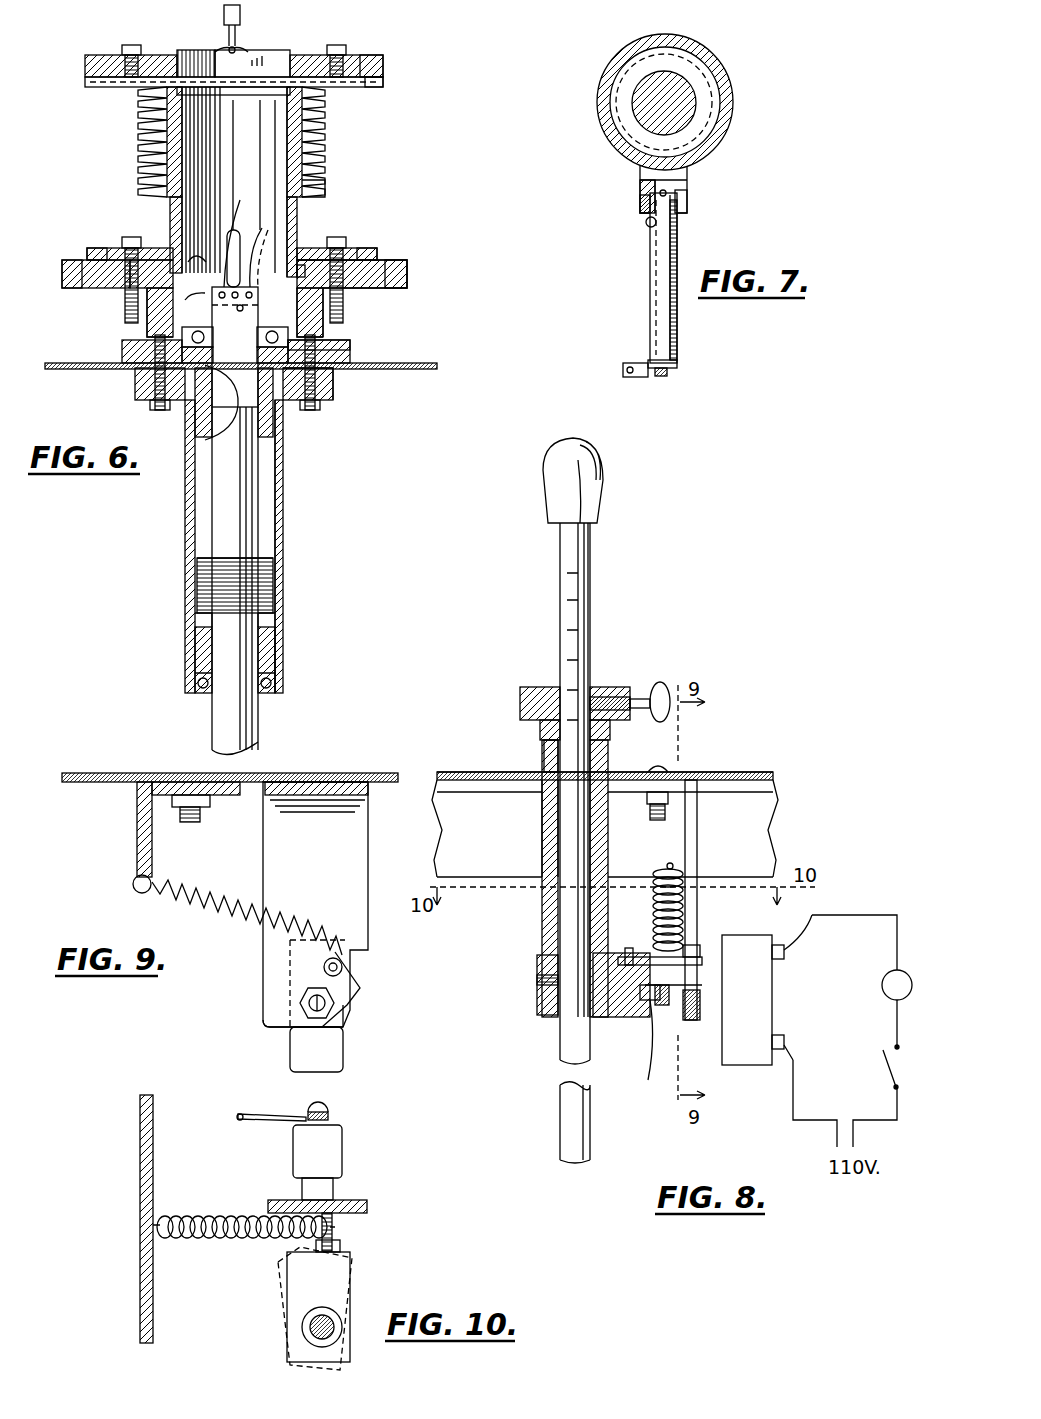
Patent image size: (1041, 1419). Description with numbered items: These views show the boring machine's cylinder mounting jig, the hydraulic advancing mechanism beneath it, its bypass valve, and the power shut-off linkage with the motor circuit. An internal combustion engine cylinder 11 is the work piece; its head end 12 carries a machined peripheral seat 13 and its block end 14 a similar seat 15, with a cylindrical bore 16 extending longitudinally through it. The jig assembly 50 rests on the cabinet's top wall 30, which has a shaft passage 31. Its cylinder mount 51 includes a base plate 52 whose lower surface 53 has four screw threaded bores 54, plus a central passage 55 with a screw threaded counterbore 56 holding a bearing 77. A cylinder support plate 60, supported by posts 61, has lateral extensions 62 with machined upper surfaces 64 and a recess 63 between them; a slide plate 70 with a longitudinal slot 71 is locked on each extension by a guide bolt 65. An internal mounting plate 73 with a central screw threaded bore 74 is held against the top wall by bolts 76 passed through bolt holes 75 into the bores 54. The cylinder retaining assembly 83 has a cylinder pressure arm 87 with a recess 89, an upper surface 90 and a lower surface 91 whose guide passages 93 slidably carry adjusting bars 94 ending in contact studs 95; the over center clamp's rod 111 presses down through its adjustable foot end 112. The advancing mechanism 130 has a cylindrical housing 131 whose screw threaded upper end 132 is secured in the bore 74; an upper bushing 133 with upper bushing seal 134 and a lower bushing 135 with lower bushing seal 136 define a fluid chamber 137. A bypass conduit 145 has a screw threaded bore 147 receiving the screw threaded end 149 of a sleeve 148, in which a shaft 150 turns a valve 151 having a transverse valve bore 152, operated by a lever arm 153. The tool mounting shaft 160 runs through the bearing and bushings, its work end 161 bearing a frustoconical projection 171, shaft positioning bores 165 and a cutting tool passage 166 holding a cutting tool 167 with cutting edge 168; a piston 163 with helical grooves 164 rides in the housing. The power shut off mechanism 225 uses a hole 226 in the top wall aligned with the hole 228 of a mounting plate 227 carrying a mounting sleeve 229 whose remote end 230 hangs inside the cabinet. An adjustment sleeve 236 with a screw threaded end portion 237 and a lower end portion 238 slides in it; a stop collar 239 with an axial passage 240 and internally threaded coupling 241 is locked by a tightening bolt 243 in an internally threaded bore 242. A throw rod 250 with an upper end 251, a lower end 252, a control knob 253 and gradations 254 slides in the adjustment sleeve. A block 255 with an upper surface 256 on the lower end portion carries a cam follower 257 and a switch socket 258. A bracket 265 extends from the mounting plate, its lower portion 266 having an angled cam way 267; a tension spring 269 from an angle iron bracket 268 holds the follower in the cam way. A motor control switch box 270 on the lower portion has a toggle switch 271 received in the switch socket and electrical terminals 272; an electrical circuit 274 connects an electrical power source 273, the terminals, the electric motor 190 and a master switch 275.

In FIG. 6, the internal combustion engine cylinder 11 is at (338, 151).
In FIG. 6, the head end 12 is at (140, 100).
In FIG. 6, the machined peripheral seat 13 is at (320, 92).
In FIG. 6, the block end 14 is at (292, 262).
In FIG. 6, the machined peripheral seat 15 is at (178, 262).
In FIG. 6, the cylindrical bore 16 is at (300, 176).
In FIG. 6, the top wall 30 is at (437, 363).
In FIG. 8, the top wall 30 is at (760, 772).
In FIG. 9, the top wall 30 is at (98, 773).
In FIG. 6, the shaft passage 31 is at (195, 410).
In FIG. 6, the jig assembly 50 is at (388, 310).
In FIG. 6, the cylinder mount 51 is at (418, 274).
In FIG. 6, the base plate 52 is at (345, 340).
In FIG. 6, the lower surface 53 is at (345, 378).
In FIG. 6, the screw threaded bores 54 is at (165, 345).
In FIG. 6, the central passage 55 is at (205, 420).
In FIG. 6, the counterbore 56 is at (195, 335).
In FIG. 6, the cylinder support plate 60 is at (64, 275).
In FIG. 6, the posts 61 is at (150, 305).
In FIG. 6, the lateral extensions 62 is at (88, 270).
In FIG. 6, the recess 63 is at (300, 270).
In FIG. 6, the machined upper surfaces 64 is at (90, 265).
In FIG. 6, the guide bolt 65 is at (120, 248).
In FIG. 6, the slide plate 70 is at (92, 260).
In FIG. 6, the longitudinal slot 71 is at (130, 247).
In FIG. 6, the internal mounting plate 73 is at (354, 401).
In FIG. 6, the central screw threaded bore 74 is at (272, 400).
In FIG. 6, the bolt holes 75 is at (155, 393).
In FIG. 6, the bolts 76 is at (150, 402).
In FIG. 6, the bearing 77 is at (207, 442).
In FIG. 6, the cylinder retaining assembly 83 is at (400, 52).
In FIG. 6, the cylinder pressure arm 87 is at (366, 56).
In FIG. 6, the recess 89 is at (268, 55).
In FIG. 6, the upper surface 90 is at (170, 55).
In FIG. 6, the lower surface 91 is at (378, 92).
In FIG. 6, the longitudinal guide passage 93 is at (90, 80).
In FIG. 6, the adjusting bar 94 is at (96, 55).
In FIG. 6, the contact stud 95 is at (292, 96).
In FIG. 6, the rod 111 is at (240, 14).
In FIG. 6, the foot end 112 is at (222, 42).
In FIG. 6, the advancing mechanism 130 is at (298, 566).
In FIG. 6, the cylindrical housing 131 is at (190, 545).
In FIG. 6, the screw threaded upper end 132 is at (152, 380).
In FIG. 6, the upper bushing 133 is at (255, 460).
In FIG. 6, the upper bushing seal 134 is at (270, 462).
In FIG. 6, the lower bushing 135 is at (270, 645).
In FIG. 6, the lower bushing seal 136 is at (215, 690).
In FIG. 6, the fluid chamber 137 is at (265, 485).
In FIG. 7, the bypass conduit 145 is at (690, 196).
In FIG. 7, the screw threaded bore 147 is at (648, 224).
In FIG. 7, the sleeve 148 is at (650, 270).
In FIG. 7, the screw threaded end 149 is at (643, 205).
In FIG. 7, the shaft 150 is at (676, 232).
In FIG. 7, the valve 151 is at (660, 194).
In FIG. 7, the valve bore 152 is at (608, 150).
In FIG. 7, the lever arm 153 is at (650, 372).
In FIG. 6, the tool mounting shaft 160 is at (248, 713).
In FIG. 6, the work end 161 is at (260, 228).
In FIG. 6, the piston 163 is at (262, 556).
In FIG. 6, the helical grooves 164 is at (200, 598).
In FIG. 6, the shaft positioning bores 165 is at (233, 228).
In FIG. 6, the cutting tool passage 166 is at (248, 282).
In FIG. 6, the cutting tool 167 is at (190, 262).
In FIG. 6, the cutting edge 168 is at (185, 300).
In FIG. 6, the frustoconical projection 171 is at (240, 202).
In FIG. 8, the electric motor 190 is at (890, 970).
In FIG. 8, the power shut off mechanism 225 is at (676, 750).
In FIG. 8, the hole 226 is at (555, 770).
In FIG. 8, the mounting plate 227 is at (470, 794).
In FIG. 9, the mounting plate 227 is at (345, 790).
In FIG. 8, the hole 228 is at (540, 826).
In FIG. 8, the mounting sleeve 229 is at (548, 872).
In FIG. 10, the mounting sleeve 229 is at (302, 1316).
In FIG. 8, the remote end 230 is at (545, 942).
In FIG. 8, the adjustment sleeve 236 is at (596, 852).
In FIG. 8, the screw threaded end portion 237 is at (545, 722).
In FIG. 8, the lower end portion 238 is at (552, 1020).
In FIG. 8, the stop collar 239 is at (535, 695).
In FIG. 8, the axial passage 240 is at (560, 690).
In FIG. 8, the internally threaded coupling 241 is at (548, 740).
In FIG. 8, the internally threaded bore 242 is at (614, 688).
In FIG. 8, the tightening bolt 243 is at (660, 688).
In FIG. 8, the throw rod 250 is at (592, 587).
In FIG. 10, the throw rod 250 is at (306, 1336).
In FIG. 8, the upper end 251 is at (592, 533).
In FIG. 8, the lower end 252 is at (560, 1152).
In FIG. 8, the control knob 253 is at (550, 492).
In FIG. 8, the gradations 254 is at (575, 630).
In FIG. 8, the block 255 is at (616, 1015).
In FIG. 10, the block 255 is at (340, 1272).
In FIG. 8, the upper surface 256 is at (626, 950).
In FIG. 8, the cam follower 257 is at (700, 950).
In FIG. 9, the cam follower 257 is at (343, 968).
In FIG. 10, the cam follower 257 is at (345, 1224).
In FIG. 8, the switch socket 258 is at (652, 1003).
In FIG. 10, the switch socket 258 is at (298, 1308).
In FIG. 8, the bracket 265 is at (694, 842).
In FIG. 9, the bracket 265 is at (290, 850).
In FIG. 10, the bracket 265 is at (282, 1200).
In FIG. 8, the lower portion 266 is at (695, 1022).
In FIG. 9, the lower portion 266 is at (278, 1015).
In FIG. 8, the angled cam way 267 is at (692, 970).
In FIG. 9, the angled cam way 267 is at (362, 995).
In FIG. 8, the angle iron bracket 268 is at (765, 805).
In FIG. 9, the angle iron bracket 268 is at (140, 826).
In FIG. 10, the angle iron bracket 268 is at (140, 1187).
In FIG. 8, the tension spring 269 is at (682, 880).
In FIG. 9, the tension spring 269 is at (228, 947).
In FIG. 10, the tension spring 269 is at (240, 1242).
In FIG. 8, the motor control switch box 270 is at (774, 1003).
In FIG. 9, the motor control switch box 270 is at (332, 1052).
In FIG. 10, the motor control switch box 270 is at (330, 1152).
In FIG. 8, the toggle switch 271 is at (665, 1032).
In FIG. 9, the toggle switch 271 is at (340, 1002).
In FIG. 10, the toggle switch 271 is at (345, 1245).
In FIG. 8, the electrical terminals 272 is at (793, 1045).
In FIG. 10, the electrical terminals 272 is at (332, 1110).
In FIG. 8, the electrical power source 273 is at (832, 1168).
In FIG. 8, the electrical circuit 274 is at (862, 915).
In FIG. 10, the electrical circuit 274 is at (245, 1120).
In FIG. 8, the master switch 275 is at (900, 1090).